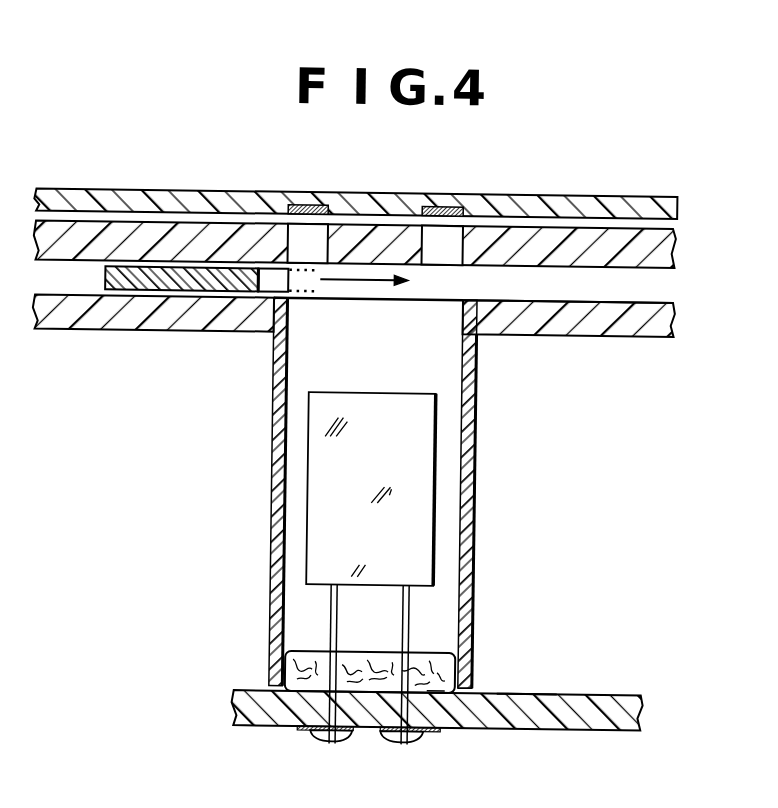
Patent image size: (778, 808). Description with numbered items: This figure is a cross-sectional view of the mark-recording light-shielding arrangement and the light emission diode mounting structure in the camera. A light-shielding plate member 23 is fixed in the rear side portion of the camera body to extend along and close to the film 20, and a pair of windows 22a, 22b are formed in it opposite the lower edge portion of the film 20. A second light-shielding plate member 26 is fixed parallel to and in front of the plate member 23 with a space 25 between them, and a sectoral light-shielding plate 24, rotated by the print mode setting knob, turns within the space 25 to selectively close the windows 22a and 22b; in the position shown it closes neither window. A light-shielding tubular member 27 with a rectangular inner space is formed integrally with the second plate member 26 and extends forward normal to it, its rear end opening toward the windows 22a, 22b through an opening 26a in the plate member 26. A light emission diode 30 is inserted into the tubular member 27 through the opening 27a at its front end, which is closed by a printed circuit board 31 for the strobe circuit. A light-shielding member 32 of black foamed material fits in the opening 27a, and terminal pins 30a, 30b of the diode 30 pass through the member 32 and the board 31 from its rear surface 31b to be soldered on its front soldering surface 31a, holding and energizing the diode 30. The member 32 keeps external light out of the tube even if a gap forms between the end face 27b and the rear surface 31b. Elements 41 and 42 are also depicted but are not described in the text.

The film 20 is at (584, 200).
The window 22a is at (295, 246).
The window 22b is at (447, 244).
The light-shielding plate member 23 is at (665, 253).
The sectoral light-shielding plate 24 is at (200, 284).
The space 25 is at (508, 288).
The second light-shielding plate member 26 is at (601, 314).
The opening 26a is at (355, 312).
The light-shielding tubular member 27 is at (464, 496).
The opening 27a is at (439, 687).
The end face 27b is at (473, 687).
The light emission diode 30 is at (331, 523).
The terminal pin 30a is at (332, 604).
The terminal pin 30b is at (412, 602).
The printed circuit board 31 is at (615, 695).
The front surface 31a is at (549, 731).
The rear surface 31b is at (531, 695).
The light-shielding member 32 is at (286, 671).
The heater 41 is at (317, 206).
The heater 42 is at (440, 204).